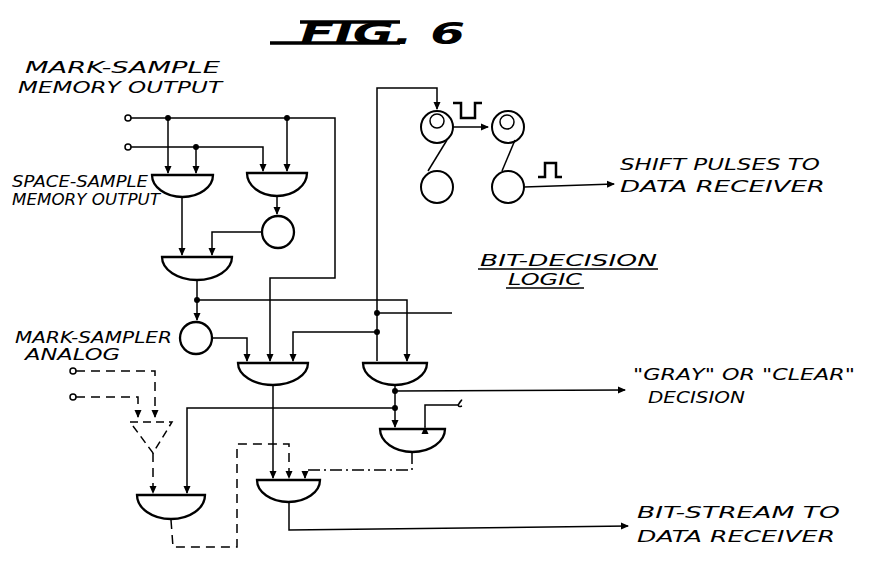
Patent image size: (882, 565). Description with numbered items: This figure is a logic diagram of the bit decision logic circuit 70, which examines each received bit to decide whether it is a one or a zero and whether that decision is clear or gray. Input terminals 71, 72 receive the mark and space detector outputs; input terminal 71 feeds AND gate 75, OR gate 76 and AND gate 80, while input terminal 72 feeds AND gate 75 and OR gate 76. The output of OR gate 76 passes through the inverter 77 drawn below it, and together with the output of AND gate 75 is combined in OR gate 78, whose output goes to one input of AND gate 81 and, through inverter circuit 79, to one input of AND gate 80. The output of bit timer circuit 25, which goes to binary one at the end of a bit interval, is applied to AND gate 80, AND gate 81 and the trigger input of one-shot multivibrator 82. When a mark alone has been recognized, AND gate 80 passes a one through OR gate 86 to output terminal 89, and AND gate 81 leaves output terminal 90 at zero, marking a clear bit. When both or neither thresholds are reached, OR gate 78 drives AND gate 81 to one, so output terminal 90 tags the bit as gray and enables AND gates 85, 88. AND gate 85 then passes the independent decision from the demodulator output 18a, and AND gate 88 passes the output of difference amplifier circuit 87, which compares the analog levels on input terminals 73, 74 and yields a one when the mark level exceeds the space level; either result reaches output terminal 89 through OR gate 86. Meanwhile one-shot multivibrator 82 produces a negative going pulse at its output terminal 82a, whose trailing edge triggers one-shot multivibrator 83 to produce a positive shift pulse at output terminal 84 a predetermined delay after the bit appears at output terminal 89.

The bit decision logic circuit 70 is at (650, 93).
The input terminal 71 is at (124, 120).
The input terminal 72 is at (124, 147).
The input terminal 73 is at (70, 372).
The input terminal 74 is at (70, 399).
The AND gate 75 is at (198, 194).
The OR gate 76 is at (292, 193).
The inverter 77 is at (288, 246).
The OR gate 78 is at (166, 278).
The inverter circuit 79 is at (193, 354).
The AND gate 80 is at (254, 384).
The AND gate 81 is at (366, 380).
The one-shot multivibrator 82 is at (433, 157).
The output terminal 82a is at (486, 124).
The one-shot multivibrator 83 is at (500, 157).
The output terminal 84 is at (606, 189).
The AND gate 85 is at (382, 436).
The OR gate 86 is at (312, 492).
The difference amplifier circuit 87 is at (95, 457).
The AND gate 88 is at (155, 520).
The output terminal 89 is at (623, 521).
The output terminal 90 is at (618, 384).
The output of demodulator 18a is at (529, 424).
The bit timer circuit 25 is at (445, 334).